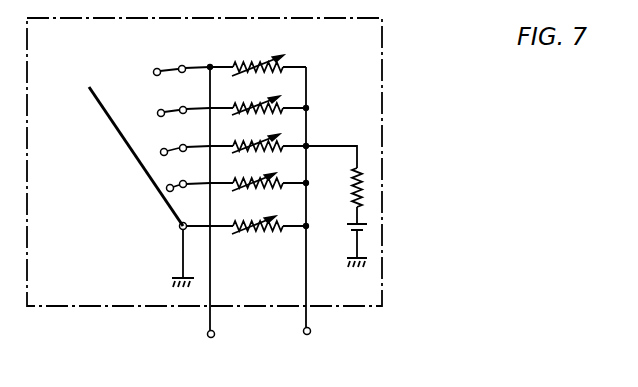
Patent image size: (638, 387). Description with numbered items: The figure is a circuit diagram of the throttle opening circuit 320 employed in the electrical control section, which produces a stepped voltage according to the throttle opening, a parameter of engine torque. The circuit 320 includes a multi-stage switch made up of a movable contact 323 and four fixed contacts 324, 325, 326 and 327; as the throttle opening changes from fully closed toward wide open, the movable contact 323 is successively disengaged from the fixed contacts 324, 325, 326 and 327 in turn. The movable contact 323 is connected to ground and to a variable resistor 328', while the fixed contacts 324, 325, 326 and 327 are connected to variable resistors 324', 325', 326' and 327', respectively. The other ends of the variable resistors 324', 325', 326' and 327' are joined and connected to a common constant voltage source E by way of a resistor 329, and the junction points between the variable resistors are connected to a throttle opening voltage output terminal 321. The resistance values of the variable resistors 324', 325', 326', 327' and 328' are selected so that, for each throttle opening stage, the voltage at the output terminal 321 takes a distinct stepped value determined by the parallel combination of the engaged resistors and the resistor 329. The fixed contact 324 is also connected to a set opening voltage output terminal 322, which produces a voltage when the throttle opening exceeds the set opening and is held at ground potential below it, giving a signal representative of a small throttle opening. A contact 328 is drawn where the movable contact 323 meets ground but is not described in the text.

The throttle opening circuit 320 is at (383, 20).
The throttle opening voltage output terminal 321 is at (303, 332).
The set opening voltage output terminal 322 is at (207, 334).
The movable contact 323 is at (100, 112).
The fixed contact 324 is at (161, 57).
The fixed contact 325 is at (161, 100).
The fixed contact 326 is at (139, 164).
The fixed contact 327 is at (155, 201).
The switch contact 328 is at (162, 255).
The variable resistor 324' is at (279, 56).
The variable resistor 325' is at (283, 96).
The variable resistor 326' is at (283, 135).
The variable resistor 327' is at (258, 196).
The variable resistor 328' is at (258, 243).
The resistor 329 is at (364, 192).